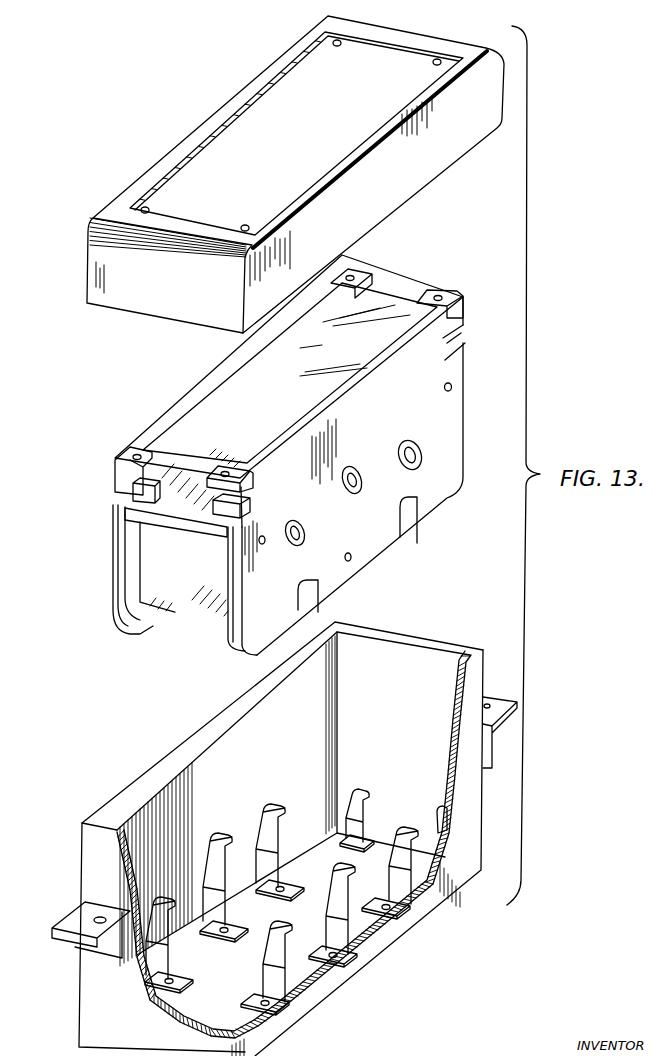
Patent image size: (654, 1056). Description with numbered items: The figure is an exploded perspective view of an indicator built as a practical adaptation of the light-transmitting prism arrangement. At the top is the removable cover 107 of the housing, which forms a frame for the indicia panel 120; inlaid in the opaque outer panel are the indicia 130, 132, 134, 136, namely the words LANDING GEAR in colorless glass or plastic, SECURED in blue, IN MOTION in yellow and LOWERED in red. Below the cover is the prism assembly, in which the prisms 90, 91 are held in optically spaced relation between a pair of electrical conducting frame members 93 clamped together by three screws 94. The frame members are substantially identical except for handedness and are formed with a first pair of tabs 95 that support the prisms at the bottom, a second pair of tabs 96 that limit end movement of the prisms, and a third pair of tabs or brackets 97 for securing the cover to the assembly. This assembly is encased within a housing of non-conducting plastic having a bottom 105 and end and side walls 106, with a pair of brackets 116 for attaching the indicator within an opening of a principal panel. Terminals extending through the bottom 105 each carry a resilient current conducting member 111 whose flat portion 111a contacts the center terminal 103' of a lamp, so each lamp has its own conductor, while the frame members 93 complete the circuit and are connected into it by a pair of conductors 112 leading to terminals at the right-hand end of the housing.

The prism 90 is at (207, 417).
The prism 91 is at (155, 576).
The electrical conducting frame members 93 is at (115, 558).
The screws 94 is at (135, 518).
The first pair of tabs 95 is at (408, 540).
The second pair of tabs 96 is at (132, 495).
The third pair of tabs or brackets 97 is at (135, 452).
The center terminal of the lamps 103' is at (343, 488).
The bottom 105 is at (232, 990).
The end and side walls 106 is at (88, 845).
The removable cover 107 is at (120, 300).
The resilient current conducting member 111 is at (279, 846).
The flat portion 111a is at (258, 808).
The conductors 112 is at (435, 815).
The brackets 116 is at (70, 917).
The indicia panel 120 is at (195, 110).
The indicia LANDING GEAR 130 is at (303, 68).
The indicia SECURED 132 is at (260, 107).
The indicia IN MOTION 134 is at (220, 143).
The indicia LOWERED 136 is at (172, 172).